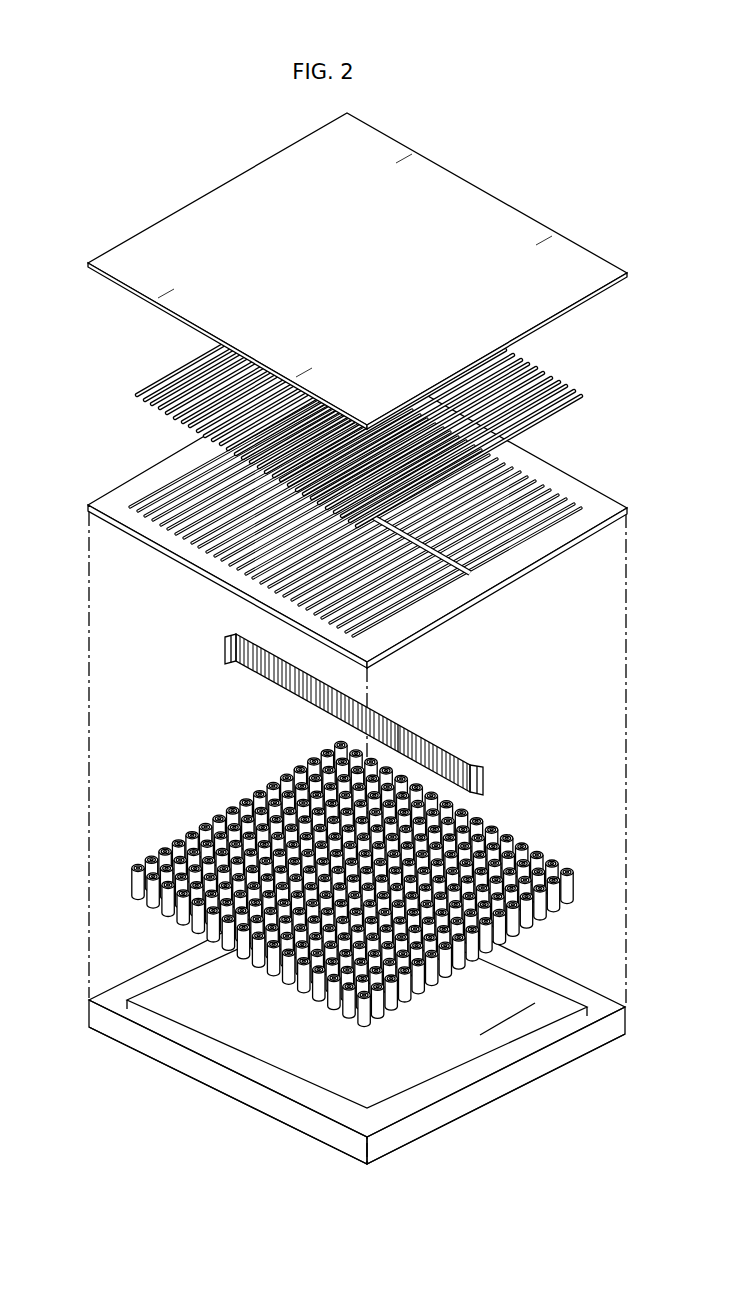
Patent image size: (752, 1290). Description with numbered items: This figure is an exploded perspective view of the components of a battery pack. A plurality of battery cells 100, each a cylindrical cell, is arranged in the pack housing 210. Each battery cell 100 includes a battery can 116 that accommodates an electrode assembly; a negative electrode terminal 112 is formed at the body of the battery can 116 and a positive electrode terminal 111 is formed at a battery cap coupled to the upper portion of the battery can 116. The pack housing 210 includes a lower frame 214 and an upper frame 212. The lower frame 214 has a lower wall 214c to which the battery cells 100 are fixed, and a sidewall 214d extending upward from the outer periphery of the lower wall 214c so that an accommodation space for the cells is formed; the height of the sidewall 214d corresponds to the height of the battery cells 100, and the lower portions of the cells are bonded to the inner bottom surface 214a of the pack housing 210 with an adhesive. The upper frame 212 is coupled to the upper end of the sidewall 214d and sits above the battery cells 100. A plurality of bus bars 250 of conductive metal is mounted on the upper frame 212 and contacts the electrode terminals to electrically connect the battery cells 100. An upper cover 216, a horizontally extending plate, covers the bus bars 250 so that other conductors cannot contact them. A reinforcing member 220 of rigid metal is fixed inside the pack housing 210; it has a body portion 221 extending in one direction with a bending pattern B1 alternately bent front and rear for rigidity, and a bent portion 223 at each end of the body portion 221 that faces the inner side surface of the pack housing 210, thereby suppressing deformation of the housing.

The battery cell 100 is at (130, 878).
The positive electrode terminal 111 is at (140, 864).
The negative electrode terminal 112 is at (141, 864).
The battery can 116 is at (137, 883).
The pack housing 210 is at (58, 352).
The upper frame 212 is at (113, 464).
The lower frame 214 is at (343, 766).
The inner bottom surface 214a is at (277, 1070).
The lower wall 214c is at (448, 1132).
The sidewall 214d is at (548, 1068).
The upper cover 216 is at (147, 209).
The reinforcing member 220 is at (221, 651).
The body portion 221 is at (411, 740).
The bent portion 223 is at (234, 633).
The bending pattern B1 is at (398, 728).
The bus bar 250 is at (160, 371).